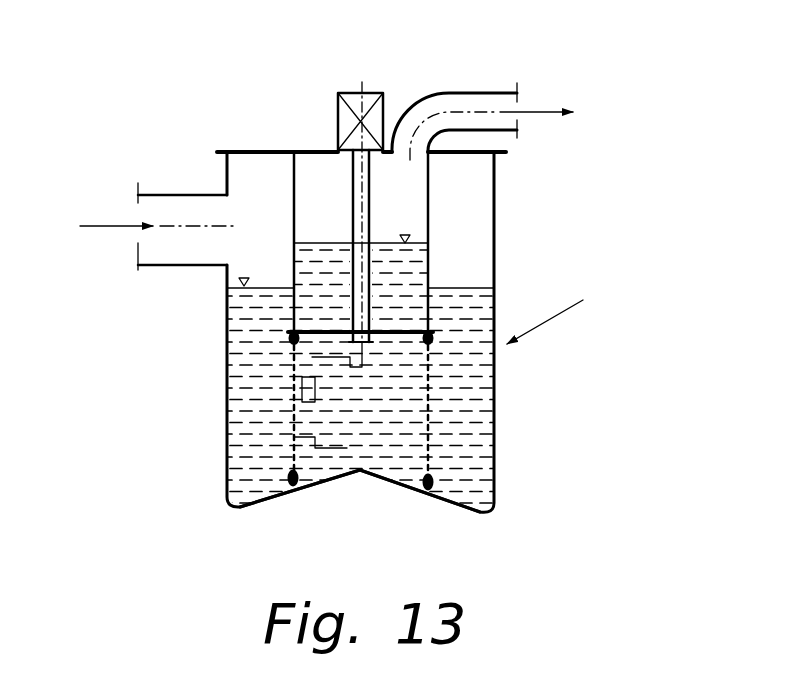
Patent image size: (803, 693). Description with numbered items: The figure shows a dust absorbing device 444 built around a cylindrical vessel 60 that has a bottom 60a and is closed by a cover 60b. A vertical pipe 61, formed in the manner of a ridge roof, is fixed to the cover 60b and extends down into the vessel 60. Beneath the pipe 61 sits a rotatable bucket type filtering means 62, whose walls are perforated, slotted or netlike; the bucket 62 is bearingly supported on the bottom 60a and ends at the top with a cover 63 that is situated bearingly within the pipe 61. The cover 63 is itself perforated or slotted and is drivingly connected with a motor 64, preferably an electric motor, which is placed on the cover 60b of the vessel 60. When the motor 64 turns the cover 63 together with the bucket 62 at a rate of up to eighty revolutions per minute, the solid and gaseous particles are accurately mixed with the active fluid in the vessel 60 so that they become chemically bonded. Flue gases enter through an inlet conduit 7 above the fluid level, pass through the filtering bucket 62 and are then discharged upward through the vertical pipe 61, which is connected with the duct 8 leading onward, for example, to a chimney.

The inlet 7 is at (158, 223).
The duct 8 is at (486, 107).
The cylindrical vessel 60 is at (473, 190).
The bottom 60a is at (453, 500).
The cover 60b is at (248, 150).
The vertical pipe 61 is at (292, 235).
The rotatable bucket type filtering means 62 is at (297, 435).
The cover 63 is at (320, 333).
The motor 64 is at (340, 122).
The dust absorbing device 444 is at (556, 286).